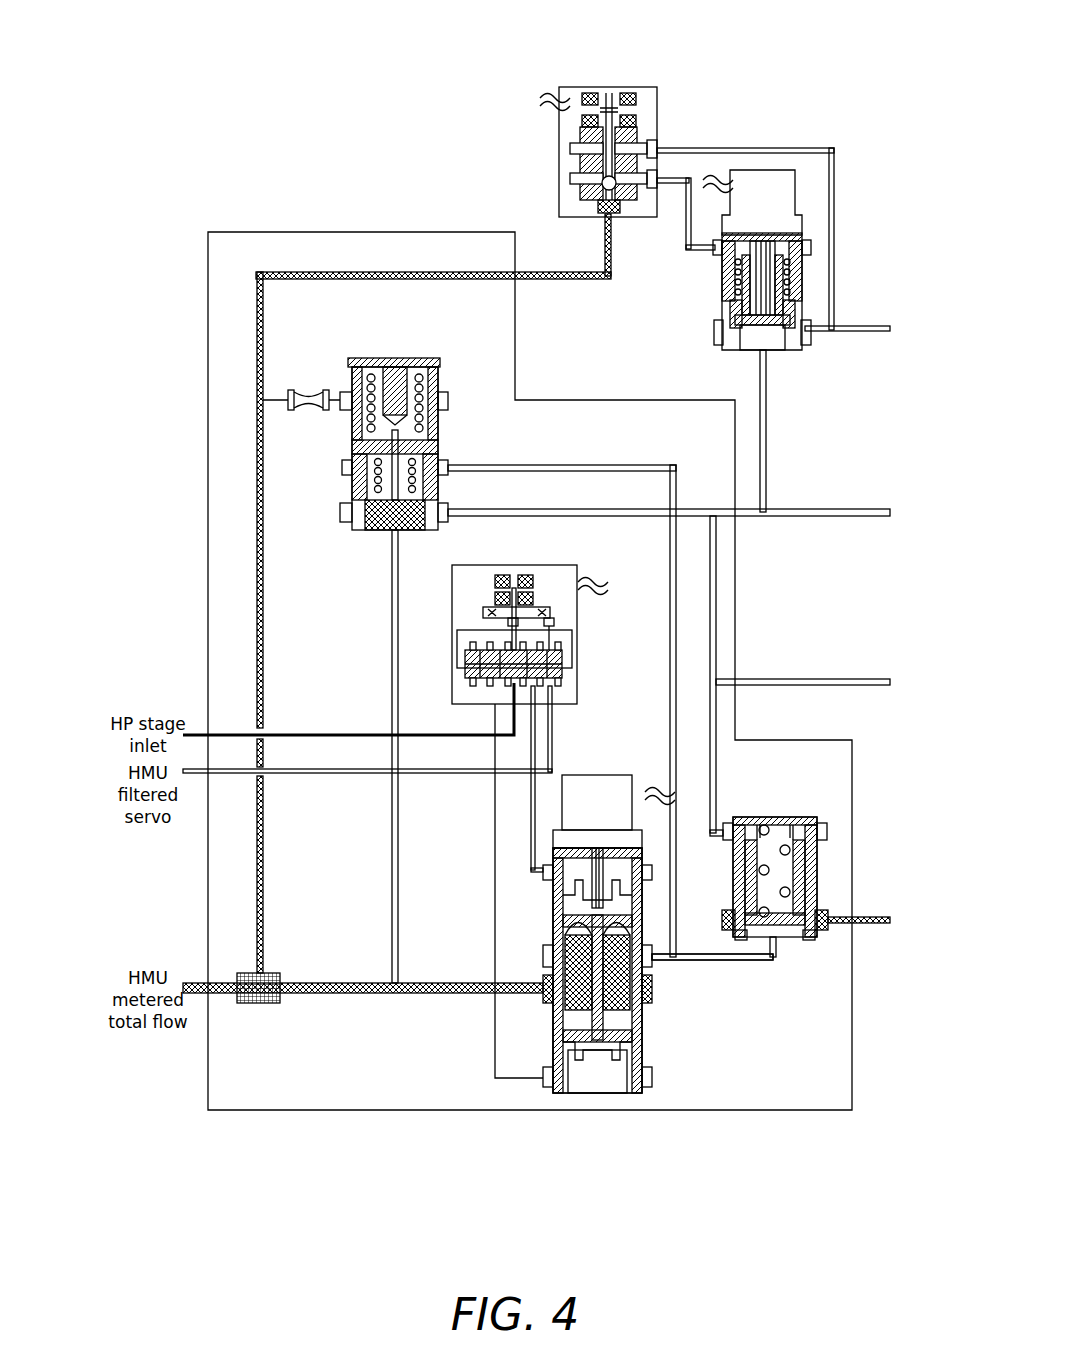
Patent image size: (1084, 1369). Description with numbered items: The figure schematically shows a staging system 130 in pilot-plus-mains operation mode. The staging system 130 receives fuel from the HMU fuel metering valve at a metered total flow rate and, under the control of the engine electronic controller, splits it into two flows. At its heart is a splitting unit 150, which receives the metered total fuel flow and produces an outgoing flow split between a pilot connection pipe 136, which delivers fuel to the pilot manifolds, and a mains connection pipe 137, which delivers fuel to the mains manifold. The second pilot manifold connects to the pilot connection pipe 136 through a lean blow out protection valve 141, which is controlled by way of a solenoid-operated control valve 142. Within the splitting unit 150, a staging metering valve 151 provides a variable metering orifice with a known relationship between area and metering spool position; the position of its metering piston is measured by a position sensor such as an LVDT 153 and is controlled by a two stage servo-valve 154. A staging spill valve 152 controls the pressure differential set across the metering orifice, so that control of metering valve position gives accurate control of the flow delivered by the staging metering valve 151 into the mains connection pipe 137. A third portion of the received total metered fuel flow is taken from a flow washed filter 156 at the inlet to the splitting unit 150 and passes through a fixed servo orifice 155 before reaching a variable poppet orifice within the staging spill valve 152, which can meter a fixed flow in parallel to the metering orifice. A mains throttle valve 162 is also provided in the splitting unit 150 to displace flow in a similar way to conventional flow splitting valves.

The staging system 130 is at (760, 40).
The pilot connection pipe 136 is at (623, 520).
The mains connection pipe 137 is at (755, 962).
The lean blow out protection valve 141 is at (720, 283).
The solenoid-operated control valve 142 is at (607, 87).
The splitting unit 150 is at (348, 232).
The staging metering valve 151 is at (652, 1048).
The staging spill valve 152 is at (393, 358).
The LVDT 153 is at (609, 934).
The two stage servo-valve 154 is at (577, 645).
The fixed servo orifice 155 is at (312, 410).
The flow washed filter 156 is at (262, 1005).
The mains throttle valve 162 is at (770, 817).